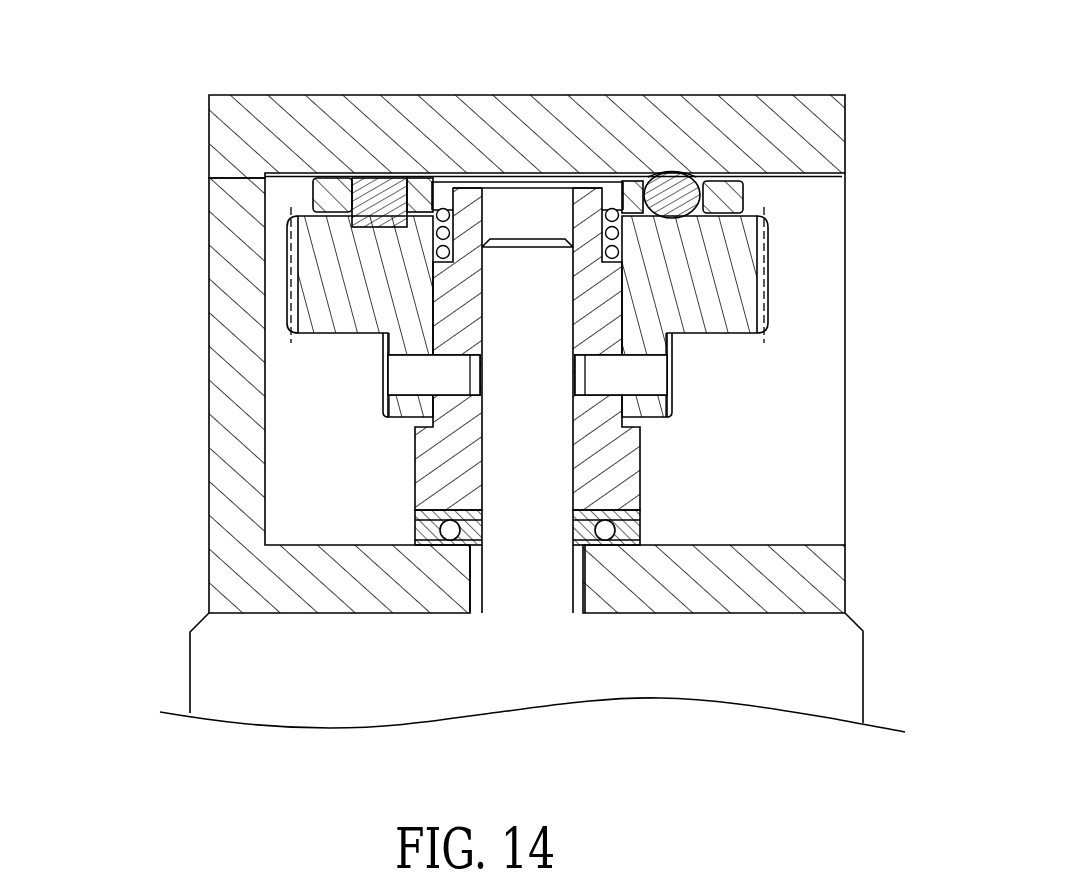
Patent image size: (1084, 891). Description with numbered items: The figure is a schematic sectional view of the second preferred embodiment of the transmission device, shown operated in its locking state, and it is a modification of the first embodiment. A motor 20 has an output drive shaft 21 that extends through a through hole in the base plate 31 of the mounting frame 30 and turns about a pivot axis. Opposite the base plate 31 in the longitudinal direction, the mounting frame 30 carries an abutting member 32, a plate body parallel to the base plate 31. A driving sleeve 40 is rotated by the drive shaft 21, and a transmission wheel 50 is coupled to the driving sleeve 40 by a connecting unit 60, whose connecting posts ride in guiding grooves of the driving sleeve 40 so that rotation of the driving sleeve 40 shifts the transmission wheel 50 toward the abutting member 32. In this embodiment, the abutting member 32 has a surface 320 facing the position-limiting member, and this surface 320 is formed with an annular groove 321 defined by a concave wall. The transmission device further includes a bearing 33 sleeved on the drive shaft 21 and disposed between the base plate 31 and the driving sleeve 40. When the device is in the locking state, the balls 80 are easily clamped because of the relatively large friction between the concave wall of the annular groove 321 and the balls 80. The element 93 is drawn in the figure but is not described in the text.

The motor 20 is at (188, 662).
The drive shaft 21 is at (552, 537).
The mounting frame 30 is at (470, 321).
The base plate 31 is at (224, 552).
The abutting member 32 is at (532, 158).
The bearing 33 is at (430, 513).
The driving sleeve 40 is at (641, 468).
The transmission wheel 50 is at (283, 272).
The connecting unit 60 is at (384, 372).
The balls 80 is at (692, 177).
The seal ring 93 is at (746, 203).
The surface 320 is at (810, 176).
The annular groove 321 is at (660, 170).